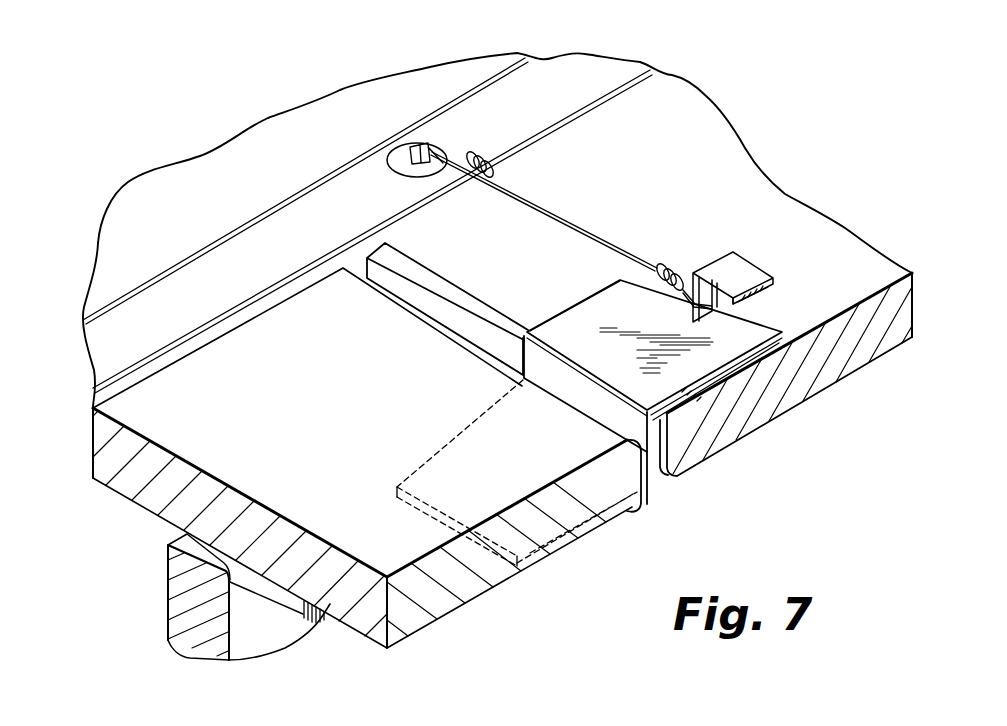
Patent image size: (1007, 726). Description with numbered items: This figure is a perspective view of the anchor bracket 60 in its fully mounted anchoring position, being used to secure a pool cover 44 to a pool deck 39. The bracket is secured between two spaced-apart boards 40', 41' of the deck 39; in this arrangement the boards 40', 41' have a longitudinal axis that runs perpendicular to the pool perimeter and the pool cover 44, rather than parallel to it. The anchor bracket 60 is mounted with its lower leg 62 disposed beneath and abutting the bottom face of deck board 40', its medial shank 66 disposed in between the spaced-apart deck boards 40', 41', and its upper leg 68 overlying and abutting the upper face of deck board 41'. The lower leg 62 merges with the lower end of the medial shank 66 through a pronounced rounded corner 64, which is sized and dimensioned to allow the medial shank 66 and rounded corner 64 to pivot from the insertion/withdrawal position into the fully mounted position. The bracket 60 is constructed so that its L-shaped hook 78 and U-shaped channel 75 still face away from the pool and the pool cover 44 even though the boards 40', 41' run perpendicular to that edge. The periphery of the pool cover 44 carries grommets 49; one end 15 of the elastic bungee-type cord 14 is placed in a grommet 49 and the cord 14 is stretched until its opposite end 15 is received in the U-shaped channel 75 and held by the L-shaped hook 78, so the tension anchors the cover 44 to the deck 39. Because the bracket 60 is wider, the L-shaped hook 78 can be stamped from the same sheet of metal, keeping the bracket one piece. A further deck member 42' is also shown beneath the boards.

The pool deck 39 is at (700, 103).
The pool cover 44 is at (258, 170).
The grommet 49 is at (397, 156).
The end of bungee cord 15 is at (462, 160).
The elastic bungee-type cord 14 is at (566, 214).
The deck board 41' is at (786, 322).
The deck board 40' is at (362, 445).
The support post 42' is at (249, 597).
The L-shaped hook 78 is at (760, 256).
The U-shaped channel 75 is at (757, 299).
The anchor bracket 60 is at (566, 301).
The upper leg 68 is at (576, 325).
The medial shank 66 is at (585, 394).
The rounded corner 64 is at (644, 484).
The lower leg 62 is at (488, 483).